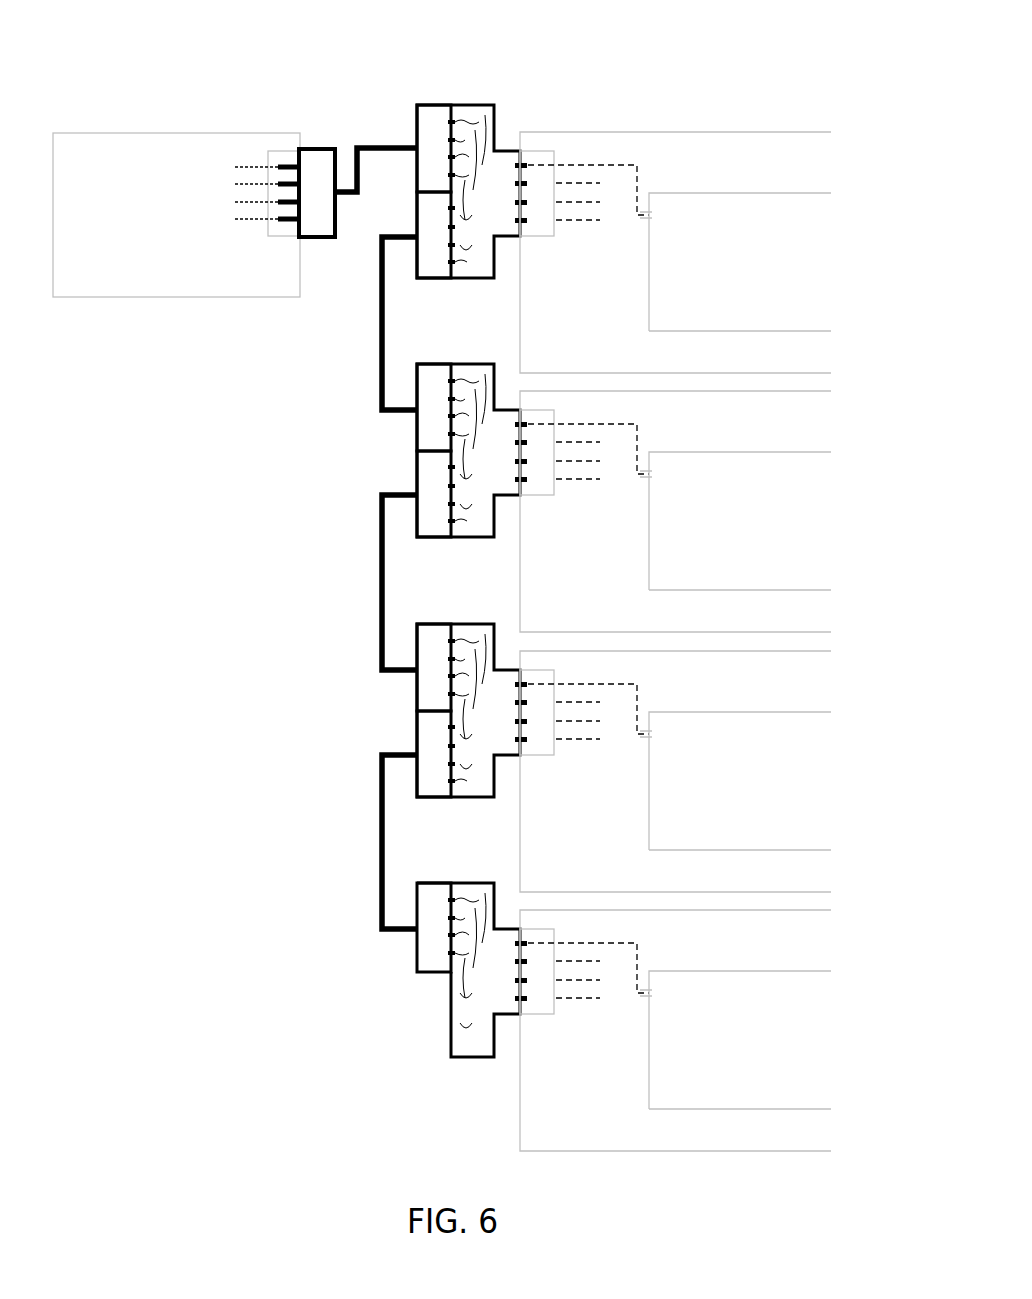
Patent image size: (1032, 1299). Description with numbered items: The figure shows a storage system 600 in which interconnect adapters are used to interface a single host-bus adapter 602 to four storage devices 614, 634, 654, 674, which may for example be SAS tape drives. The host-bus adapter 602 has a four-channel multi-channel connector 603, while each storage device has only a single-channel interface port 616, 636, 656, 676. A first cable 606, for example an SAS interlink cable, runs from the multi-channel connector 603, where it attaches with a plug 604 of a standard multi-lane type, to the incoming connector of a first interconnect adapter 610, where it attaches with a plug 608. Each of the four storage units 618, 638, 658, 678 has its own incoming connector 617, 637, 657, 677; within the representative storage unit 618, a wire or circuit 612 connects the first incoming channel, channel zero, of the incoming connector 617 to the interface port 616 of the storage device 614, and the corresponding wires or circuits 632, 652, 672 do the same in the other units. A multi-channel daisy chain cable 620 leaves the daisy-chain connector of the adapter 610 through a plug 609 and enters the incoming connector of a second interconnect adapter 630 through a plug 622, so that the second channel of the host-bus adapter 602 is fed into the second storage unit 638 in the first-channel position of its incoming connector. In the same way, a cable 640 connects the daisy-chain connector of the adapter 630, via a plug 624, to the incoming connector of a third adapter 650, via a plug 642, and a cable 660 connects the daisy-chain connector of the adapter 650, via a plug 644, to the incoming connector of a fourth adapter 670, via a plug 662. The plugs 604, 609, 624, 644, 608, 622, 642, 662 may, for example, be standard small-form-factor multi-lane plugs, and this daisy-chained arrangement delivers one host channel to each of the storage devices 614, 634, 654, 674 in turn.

The storage system 600 is at (266, 32).
The host-bus adapter 602 is at (112, 132).
The multi-channel connector 603 is at (283, 240).
The plug 604 is at (318, 146).
The first cable 606 is at (398, 155).
The plug 608 is at (413, 108).
The plug 609 is at (418, 218).
The interconnect adapter 610 is at (497, 118).
The wire or circuit 612 is at (640, 166).
The storage device 614 is at (715, 192).
The single-channel interface port 616 is at (654, 222).
The incoming connector 617 is at (537, 238).
The storage unit 618 is at (832, 150).
The multi-channel cable 620 is at (379, 326).
The plug 622 is at (416, 440).
The plug 624 is at (416, 478).
The second interconnect adapter 630 is at (482, 362).
The wire or circuit 632 is at (640, 425).
The storage device 634 is at (717, 451).
The single-channel interface port 636 is at (654, 481).
The incoming connector 637 is at (537, 497).
The storage unit 638 is at (832, 409).
The cable 640 is at (379, 579).
The plug 642 is at (416, 698).
The plug 644 is at (416, 738).
The interconnect adapter 650 is at (482, 622).
The wire or circuit 652 is at (640, 685).
The storage device 654 is at (719, 711).
The single-channel interface port 656 is at (654, 741).
The incoming connector 657 is at (537, 757).
The storage unit 658 is at (832, 669).
The cable 660 is at (379, 838).
The plug 662 is at (416, 960).
The interconnect adapter 670 is at (482, 881).
The wire or circuit 672 is at (640, 944).
The storage device 674 is at (719, 970).
The single-channel interface port 676 is at (654, 1000).
The incoming connector 677 is at (537, 1016).
The storage unit 678 is at (832, 928).